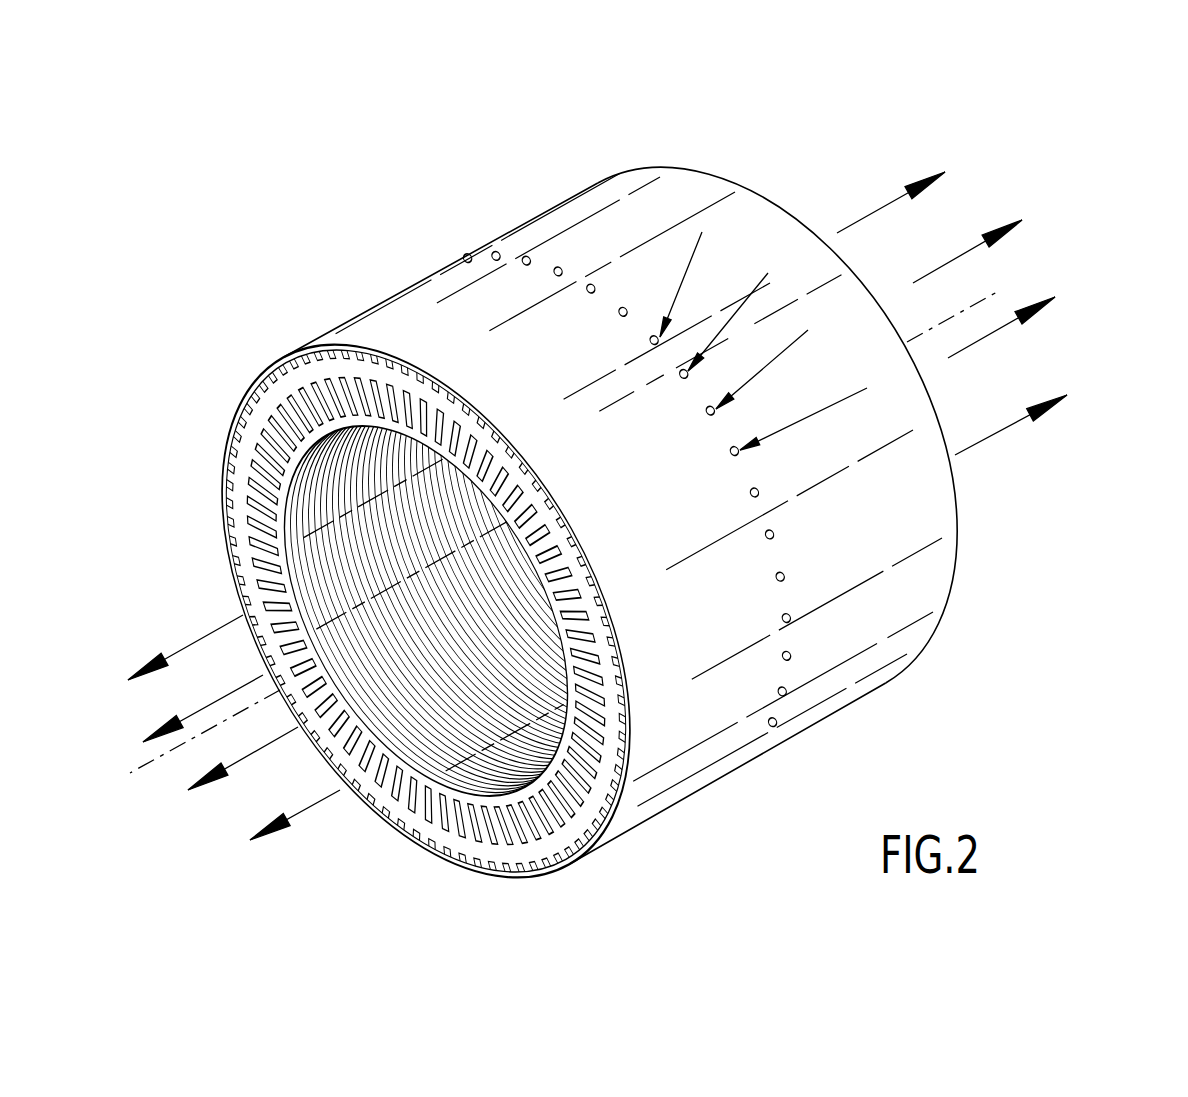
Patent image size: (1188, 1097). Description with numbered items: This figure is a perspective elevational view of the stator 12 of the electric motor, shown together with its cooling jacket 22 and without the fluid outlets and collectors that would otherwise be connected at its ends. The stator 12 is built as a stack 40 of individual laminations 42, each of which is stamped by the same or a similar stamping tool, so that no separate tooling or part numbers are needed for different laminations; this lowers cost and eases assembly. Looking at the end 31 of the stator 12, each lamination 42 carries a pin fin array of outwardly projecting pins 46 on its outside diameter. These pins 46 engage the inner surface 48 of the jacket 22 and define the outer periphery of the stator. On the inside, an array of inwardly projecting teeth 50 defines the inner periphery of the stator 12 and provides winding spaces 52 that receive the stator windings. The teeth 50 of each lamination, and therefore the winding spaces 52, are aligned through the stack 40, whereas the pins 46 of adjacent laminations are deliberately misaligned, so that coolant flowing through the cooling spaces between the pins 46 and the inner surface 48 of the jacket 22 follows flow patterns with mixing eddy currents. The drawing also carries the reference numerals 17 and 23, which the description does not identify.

The stator 12 is at (296, 246).
The cooling air flow 17 is at (197, 643).
The jacket 22 is at (427, 290).
The cooling holes 23 is at (530, 256).
The end 31 is at (243, 462).
The stack 40 is at (298, 522).
The individual laminations 42 is at (290, 494).
The outwardly projecting pins 46 is at (493, 442).
The inner surface 48 is at (490, 452).
The inwardly projecting teeth 50 is at (312, 412).
The winding spaces 52 is at (293, 403).